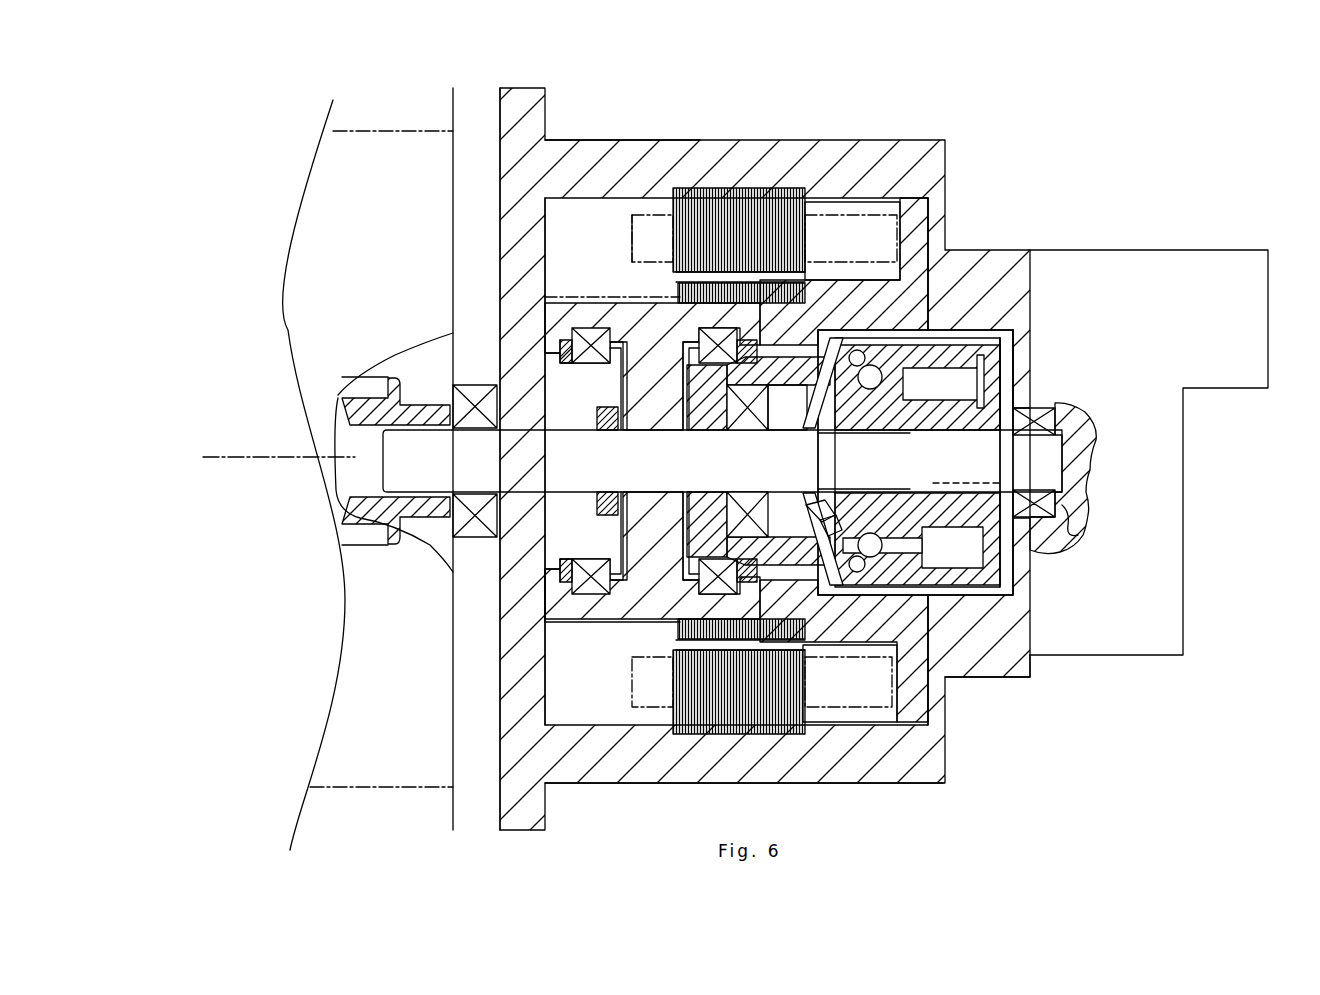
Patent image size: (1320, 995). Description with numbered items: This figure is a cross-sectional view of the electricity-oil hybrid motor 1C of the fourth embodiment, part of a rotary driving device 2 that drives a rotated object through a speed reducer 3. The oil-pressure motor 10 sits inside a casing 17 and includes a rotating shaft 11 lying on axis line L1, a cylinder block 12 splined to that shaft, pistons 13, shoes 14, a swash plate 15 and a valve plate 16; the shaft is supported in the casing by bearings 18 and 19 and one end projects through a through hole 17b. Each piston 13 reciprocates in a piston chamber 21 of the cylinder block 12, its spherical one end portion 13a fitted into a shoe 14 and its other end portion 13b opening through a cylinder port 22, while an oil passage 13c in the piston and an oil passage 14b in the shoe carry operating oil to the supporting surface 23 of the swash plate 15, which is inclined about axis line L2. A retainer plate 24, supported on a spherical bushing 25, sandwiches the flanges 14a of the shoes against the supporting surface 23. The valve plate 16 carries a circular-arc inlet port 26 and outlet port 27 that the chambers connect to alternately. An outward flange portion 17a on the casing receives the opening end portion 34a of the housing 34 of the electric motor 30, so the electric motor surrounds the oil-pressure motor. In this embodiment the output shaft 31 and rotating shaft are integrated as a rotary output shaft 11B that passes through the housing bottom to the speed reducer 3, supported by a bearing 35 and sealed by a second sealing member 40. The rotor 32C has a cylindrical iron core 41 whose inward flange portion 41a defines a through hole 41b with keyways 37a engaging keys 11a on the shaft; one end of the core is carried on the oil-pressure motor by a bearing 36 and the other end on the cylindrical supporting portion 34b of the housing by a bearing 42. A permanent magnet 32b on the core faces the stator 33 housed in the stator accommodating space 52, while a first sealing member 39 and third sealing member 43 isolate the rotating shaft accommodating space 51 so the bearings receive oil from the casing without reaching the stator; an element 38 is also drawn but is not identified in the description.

The rotary driving device 2 is at (683, 112).
The speed reducer 3 is at (408, 131).
The oil-pressure motor 10 is at (1033, 199).
The electricity-oil hybrid motor 1C is at (1005, 68).
The rotating shaft 11 is at (575, 548).
The keys 11a is at (625, 440).
The rotary output shaft 11B is at (548, 461).
The cylinder block 12 is at (1000, 578).
The pistons 13 is at (975, 340).
The one end portion of piston 13a is at (940, 345).
The other end portion of piston 13b is at (1005, 320).
The oil passage of piston 13c is at (935, 388).
The shoes 14 is at (880, 348).
The flange of shoe 14a is at (848, 352).
The oil passage of shoe 14b is at (862, 350).
The swash plate 15 is at (830, 355).
The valve plate 16 is at (1045, 398).
The casing 17 is at (996, 252).
The outward flange portion 17a is at (935, 757).
The through hole 17b is at (672, 497).
The bearing 18 is at (746, 432).
The bearing 19 is at (1048, 420).
The piston chambers 21 is at (960, 568).
The cylinder port 22 is at (990, 385).
The supporting surface 23 is at (808, 503).
The retainer plate 24 is at (835, 520).
The spherical bushing 25 is at (862, 433).
The inlet port 26 is at (1012, 398).
The outlet port 27 is at (1030, 528).
The electric motor 30 is at (900, 137).
The output shaft 31 is at (565, 528).
The permanent magnet 32b is at (676, 273).
The rotor 32C is at (593, 213).
The stator 33 is at (758, 185).
The housing 34 is at (822, 160).
The opening end portion 34a is at (887, 785).
The cylindrical supporting portion 34b is at (640, 365).
The bearing 35 is at (478, 382).
The bearing 36 is at (700, 578).
The keyways 37a is at (650, 440).
The spacer 38 is at (560, 500).
The first sealing member 39 is at (735, 335).
The second sealing member 40 is at (606, 407).
The iron core 41 is at (618, 305).
The inward flange portion 41a is at (676, 283).
The through hole 41b is at (658, 495).
The bearing 42 is at (568, 363).
The third sealing member 43 is at (575, 328).
The rotating shaft accommodating space 51 is at (705, 402).
The stator accommodating space 52 is at (583, 150).
The axis line of rotating shaft L1 is at (257, 460).
The axis line L2 is at (800, 462).